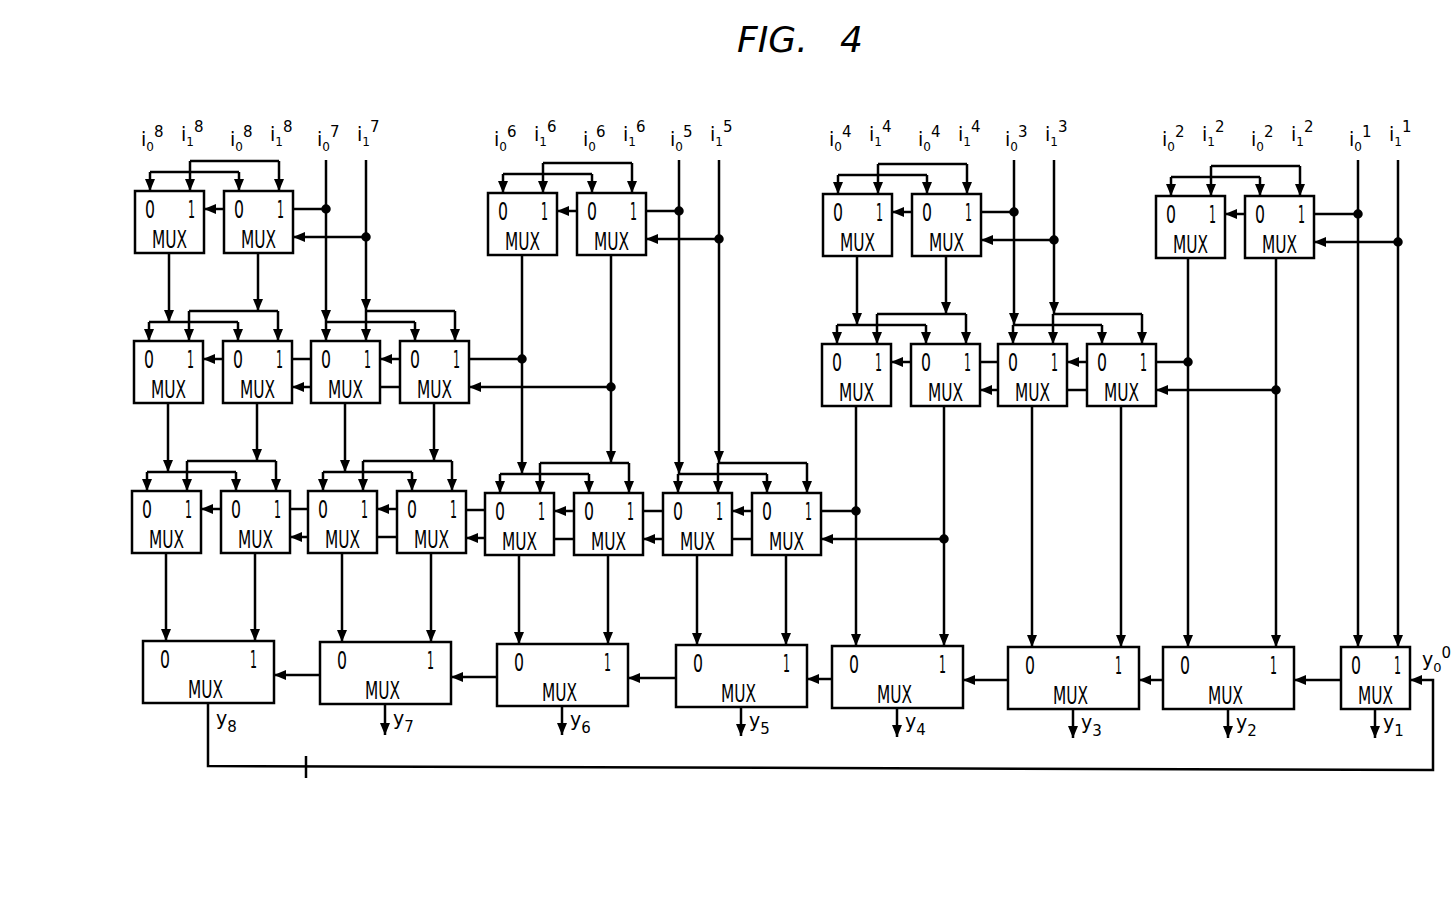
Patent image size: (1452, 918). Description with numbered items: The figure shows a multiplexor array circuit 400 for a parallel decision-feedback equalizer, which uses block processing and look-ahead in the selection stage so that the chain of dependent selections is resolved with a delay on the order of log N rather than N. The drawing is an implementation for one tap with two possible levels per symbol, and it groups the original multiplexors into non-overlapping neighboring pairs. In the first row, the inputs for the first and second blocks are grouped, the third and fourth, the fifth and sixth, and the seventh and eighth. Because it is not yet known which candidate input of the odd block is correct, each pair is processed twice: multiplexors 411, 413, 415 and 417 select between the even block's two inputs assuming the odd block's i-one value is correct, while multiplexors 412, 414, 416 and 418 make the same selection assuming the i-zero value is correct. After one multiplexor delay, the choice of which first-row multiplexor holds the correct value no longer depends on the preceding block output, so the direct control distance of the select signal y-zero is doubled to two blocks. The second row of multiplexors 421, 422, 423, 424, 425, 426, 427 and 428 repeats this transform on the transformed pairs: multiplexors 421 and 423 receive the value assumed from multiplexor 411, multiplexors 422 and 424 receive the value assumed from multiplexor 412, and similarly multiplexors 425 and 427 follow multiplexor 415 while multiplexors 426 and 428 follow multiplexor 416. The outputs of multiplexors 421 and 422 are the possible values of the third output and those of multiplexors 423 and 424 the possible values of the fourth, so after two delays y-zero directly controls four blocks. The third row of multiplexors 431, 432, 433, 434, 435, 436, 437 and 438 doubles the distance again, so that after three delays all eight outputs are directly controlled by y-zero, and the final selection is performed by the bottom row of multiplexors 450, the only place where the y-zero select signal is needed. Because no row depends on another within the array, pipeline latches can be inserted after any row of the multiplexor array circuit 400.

The multiplexor array circuit 400 is at (809, 84).
The multiplexor 411 is at (1294, 261).
The multiplexor 412 is at (1173, 261).
The multiplexor 413 is at (961, 259).
The multiplexor 414 is at (840, 259).
The multiplexor 415 is at (626, 258).
The multiplexor 416 is at (505, 258).
The multiplexor 417 is at (273, 256).
The multiplexor 418 is at (152, 256).
The multiplexor 421 is at (1104, 409).
The multiplexor 422 is at (1015, 409).
The multiplexor 423 is at (928, 409).
The multiplexor 424 is at (839, 409).
The multiplexor 425 is at (417, 406).
The multiplexor 426 is at (328, 406).
The multiplexor 427 is at (240, 406).
The multiplexor 428 is at (151, 406).
The multiplexor 431 is at (769, 558).
The multiplexor 432 is at (680, 558).
The multiplexor 433 is at (591, 558).
The multiplexor 434 is at (502, 558).
The multiplexor 435 is at (414, 556).
The multiplexor 436 is at (325, 556).
The multiplexor 437 is at (238, 556).
The multiplexor 438 is at (149, 556).
The bottom row of multiplexors 450 is at (170, 705).